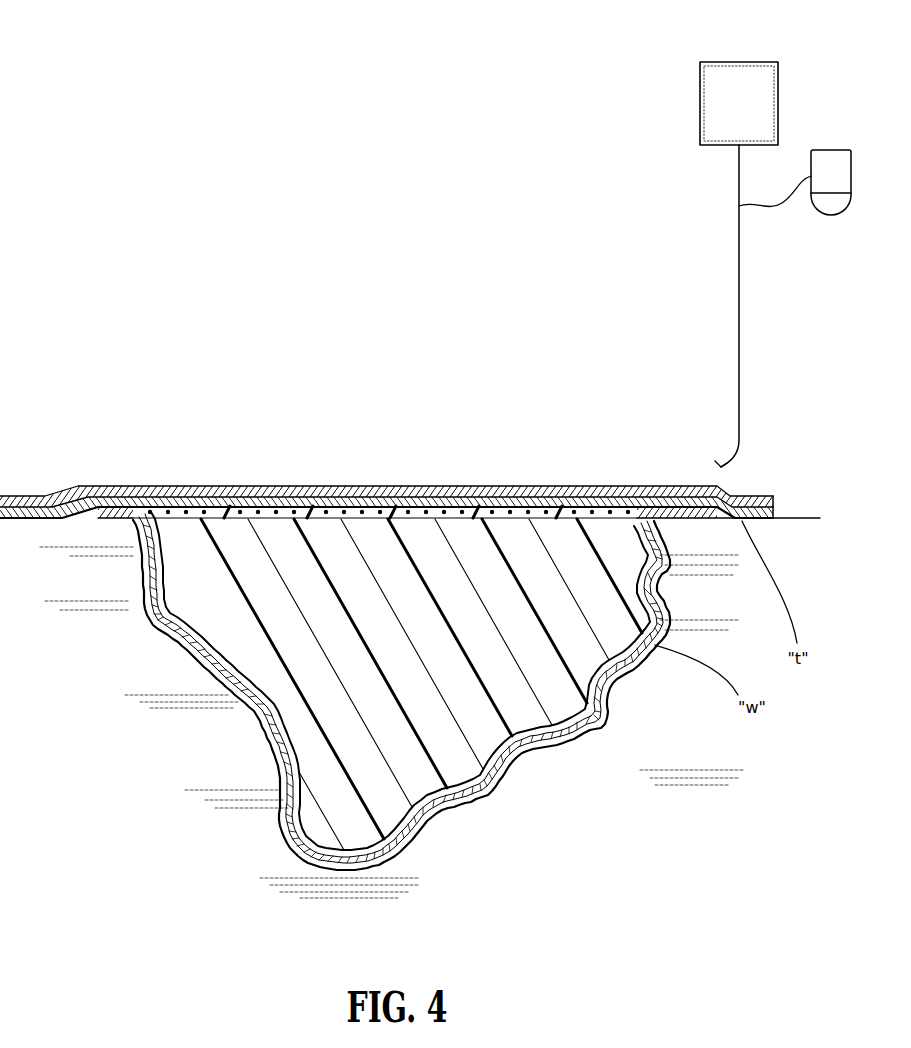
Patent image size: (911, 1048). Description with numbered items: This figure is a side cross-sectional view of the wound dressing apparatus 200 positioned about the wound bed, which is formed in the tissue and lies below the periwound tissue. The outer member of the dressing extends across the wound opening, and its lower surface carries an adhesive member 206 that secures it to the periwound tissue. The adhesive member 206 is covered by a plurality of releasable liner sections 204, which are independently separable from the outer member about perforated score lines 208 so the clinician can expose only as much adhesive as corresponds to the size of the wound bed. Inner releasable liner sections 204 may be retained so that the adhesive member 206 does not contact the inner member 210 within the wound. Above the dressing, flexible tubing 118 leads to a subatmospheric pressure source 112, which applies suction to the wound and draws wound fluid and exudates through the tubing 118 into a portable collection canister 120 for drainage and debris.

The subatmospheric pressure source 112 is at (746, 78).
The flexible tubing 118 is at (744, 304).
The collection canister 120 is at (831, 150).
The wound dressing apparatus 200 is at (212, 449).
The releasable liner sections 204 is at (433, 507).
The adhesive member 206 is at (72, 492).
The score lines 208 is at (310, 507).
The inner member 210 is at (510, 698).